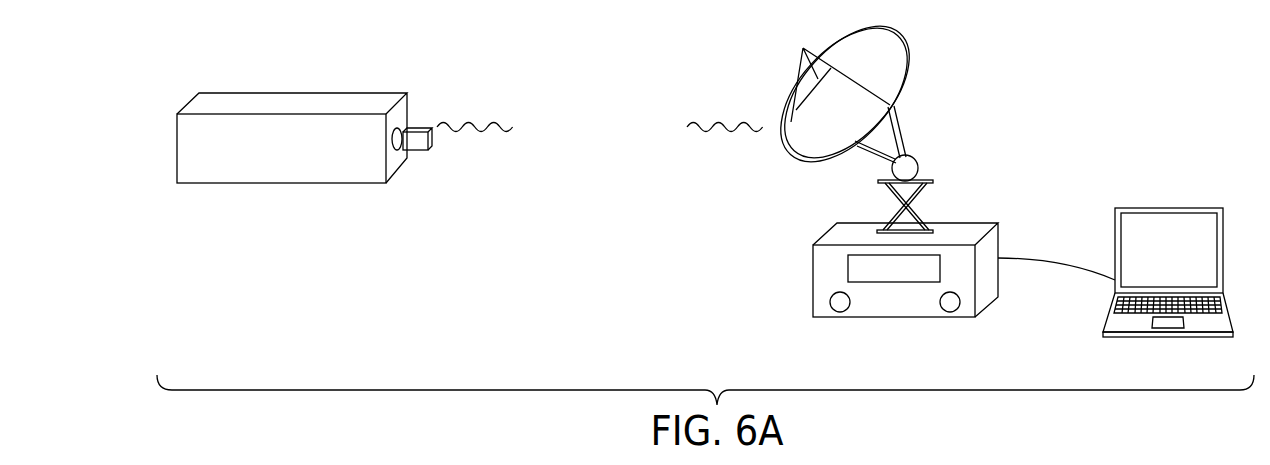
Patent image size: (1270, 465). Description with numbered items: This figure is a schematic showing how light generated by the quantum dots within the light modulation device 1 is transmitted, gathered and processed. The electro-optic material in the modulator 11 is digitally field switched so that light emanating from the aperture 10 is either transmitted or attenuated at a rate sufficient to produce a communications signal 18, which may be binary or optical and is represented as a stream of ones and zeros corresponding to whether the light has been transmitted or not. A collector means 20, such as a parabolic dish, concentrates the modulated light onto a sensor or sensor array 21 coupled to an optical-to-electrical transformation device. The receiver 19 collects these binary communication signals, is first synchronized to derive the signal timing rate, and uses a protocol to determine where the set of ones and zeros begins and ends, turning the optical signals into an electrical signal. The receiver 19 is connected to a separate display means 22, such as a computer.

The light modulation device 1 is at (282, 185).
The aperture 10 is at (408, 116).
The modulator 11 is at (415, 150).
The communications signal 18 is at (600, 146).
The receiver 19 is at (895, 317).
The collector means 20 is at (927, 53).
The sensor or sensor array 21 is at (930, 160).
The separate display means 22 is at (1165, 206).